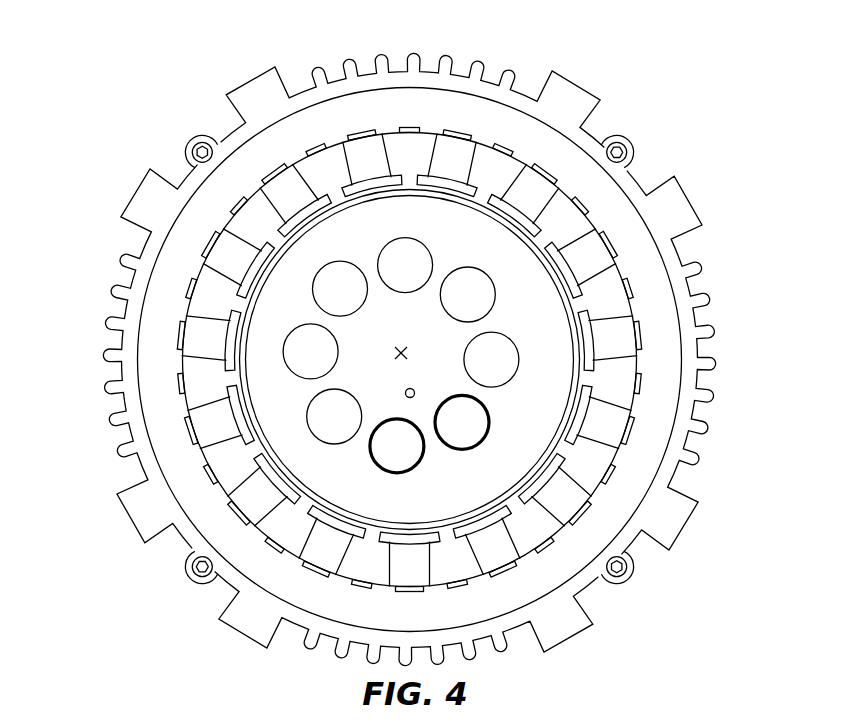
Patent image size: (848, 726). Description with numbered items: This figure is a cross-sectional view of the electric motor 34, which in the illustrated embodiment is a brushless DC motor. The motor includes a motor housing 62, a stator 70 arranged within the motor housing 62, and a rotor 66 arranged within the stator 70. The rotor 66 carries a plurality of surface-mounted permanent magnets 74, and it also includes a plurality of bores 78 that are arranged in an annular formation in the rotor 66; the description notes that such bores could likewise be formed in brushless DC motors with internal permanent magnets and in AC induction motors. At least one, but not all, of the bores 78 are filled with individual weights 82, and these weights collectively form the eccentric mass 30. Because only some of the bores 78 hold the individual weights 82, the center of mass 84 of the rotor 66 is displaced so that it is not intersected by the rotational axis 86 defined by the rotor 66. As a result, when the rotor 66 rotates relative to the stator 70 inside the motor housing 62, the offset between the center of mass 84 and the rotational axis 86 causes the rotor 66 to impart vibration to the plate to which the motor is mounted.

The eccentric mass 30 is at (437, 460).
The electric motor 34 is at (135, 82).
The motor housing 62 is at (677, 207).
The rotor 66 is at (545, 380).
The stator 70 is at (622, 338).
The surface-mounted permanent magnets 74 is at (137, 280).
The bores 78 is at (397, 347).
The individual weights 82 is at (398, 450).
The center of mass 84 is at (405, 387).
The rotational axis 86 is at (178, 182).